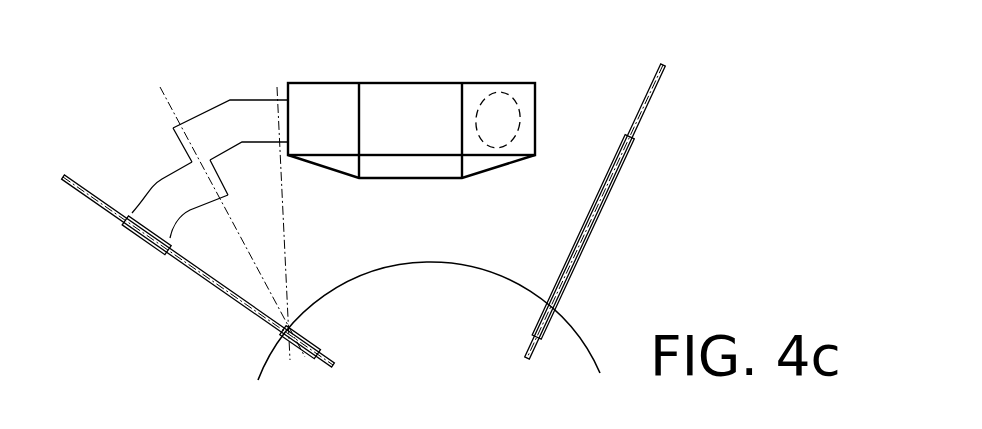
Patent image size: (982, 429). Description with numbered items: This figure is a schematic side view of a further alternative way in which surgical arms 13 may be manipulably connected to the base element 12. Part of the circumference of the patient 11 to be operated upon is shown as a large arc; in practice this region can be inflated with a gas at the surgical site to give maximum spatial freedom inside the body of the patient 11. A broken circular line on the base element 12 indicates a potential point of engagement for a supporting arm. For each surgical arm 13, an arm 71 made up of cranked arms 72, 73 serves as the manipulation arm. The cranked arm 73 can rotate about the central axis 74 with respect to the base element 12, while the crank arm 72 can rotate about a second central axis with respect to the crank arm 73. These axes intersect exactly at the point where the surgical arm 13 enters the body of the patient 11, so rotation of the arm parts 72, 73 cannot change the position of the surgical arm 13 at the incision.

The patient 11 is at (575, 330).
The base element 12 is at (395, 108).
The surgical arm 13 is at (188, 265).
The arm 71 is at (145, 100).
The crank arm 72 is at (168, 98).
The cranked arm 73 is at (240, 128).
The central axis 74 is at (282, 208).